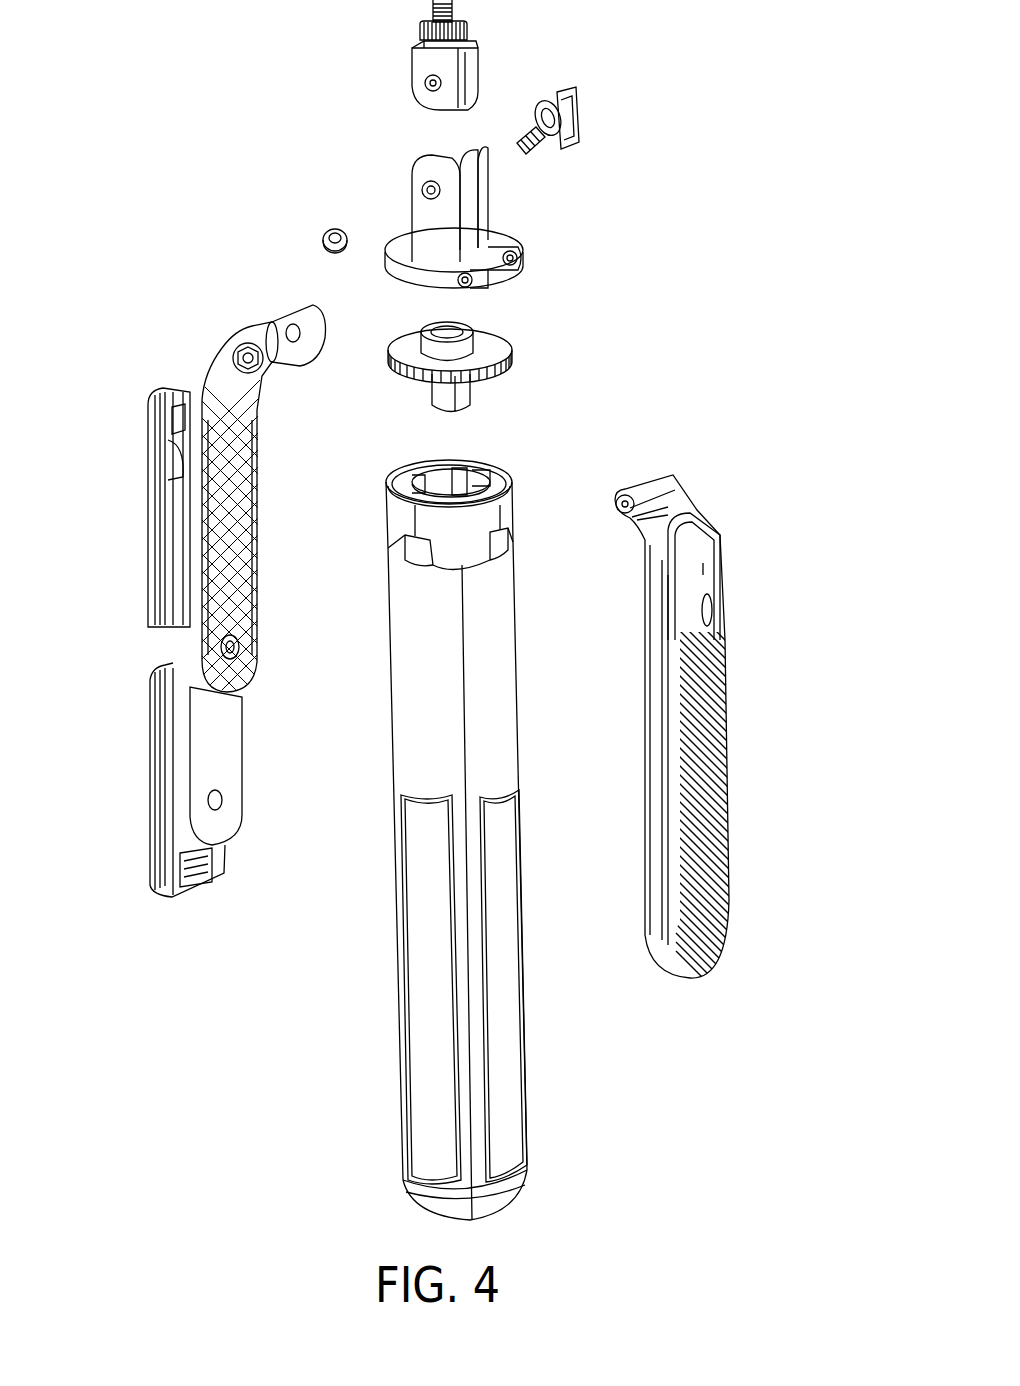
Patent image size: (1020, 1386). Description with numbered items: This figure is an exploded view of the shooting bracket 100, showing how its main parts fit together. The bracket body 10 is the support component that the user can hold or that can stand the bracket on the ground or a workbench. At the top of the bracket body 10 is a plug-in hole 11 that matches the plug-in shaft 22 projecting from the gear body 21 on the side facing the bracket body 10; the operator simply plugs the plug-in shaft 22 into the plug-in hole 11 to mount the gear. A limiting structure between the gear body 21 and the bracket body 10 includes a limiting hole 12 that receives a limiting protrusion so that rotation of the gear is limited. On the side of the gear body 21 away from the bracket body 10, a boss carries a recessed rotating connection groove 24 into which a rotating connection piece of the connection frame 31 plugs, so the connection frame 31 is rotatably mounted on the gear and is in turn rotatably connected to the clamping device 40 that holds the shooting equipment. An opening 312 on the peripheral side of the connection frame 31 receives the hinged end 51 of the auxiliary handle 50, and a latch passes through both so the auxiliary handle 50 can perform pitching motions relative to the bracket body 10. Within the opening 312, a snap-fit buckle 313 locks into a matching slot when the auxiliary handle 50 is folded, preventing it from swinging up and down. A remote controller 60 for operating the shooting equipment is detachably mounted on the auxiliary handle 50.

The shooting bracket 100 is at (205, 99).
The bracket body 10 is at (488, 675).
The plug-in hole 11 is at (422, 470).
The limiting hole 12 is at (477, 470).
The gear body 21 is at (493, 352).
The plug-in shaft 22 is at (433, 397).
The rotating connection groove 24 is at (442, 337).
The connection frame 31 is at (420, 236).
The opening 312 is at (480, 270).
The snap-fit buckle 313 is at (507, 257).
The clamping device 40 is at (177, 500).
The auxiliary handle 50 is at (703, 753).
The hinged end 51 is at (663, 475).
The remote controller 60 is at (712, 582).